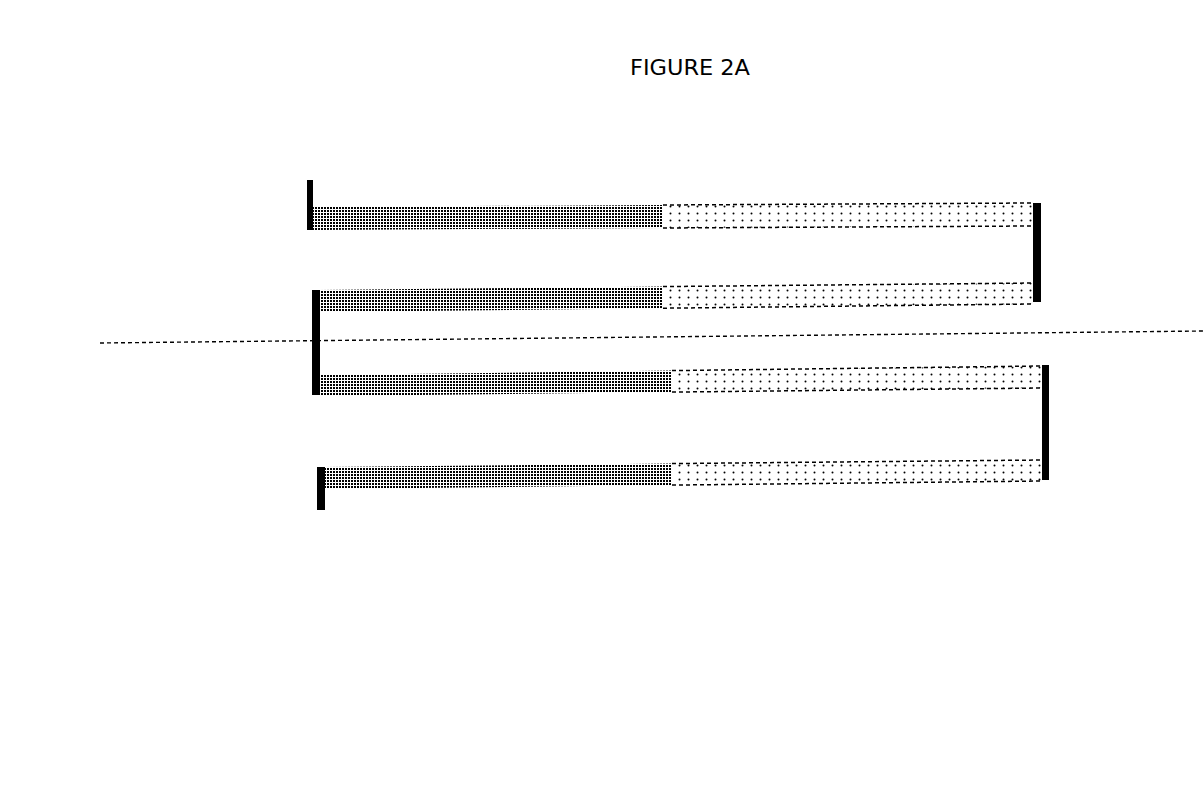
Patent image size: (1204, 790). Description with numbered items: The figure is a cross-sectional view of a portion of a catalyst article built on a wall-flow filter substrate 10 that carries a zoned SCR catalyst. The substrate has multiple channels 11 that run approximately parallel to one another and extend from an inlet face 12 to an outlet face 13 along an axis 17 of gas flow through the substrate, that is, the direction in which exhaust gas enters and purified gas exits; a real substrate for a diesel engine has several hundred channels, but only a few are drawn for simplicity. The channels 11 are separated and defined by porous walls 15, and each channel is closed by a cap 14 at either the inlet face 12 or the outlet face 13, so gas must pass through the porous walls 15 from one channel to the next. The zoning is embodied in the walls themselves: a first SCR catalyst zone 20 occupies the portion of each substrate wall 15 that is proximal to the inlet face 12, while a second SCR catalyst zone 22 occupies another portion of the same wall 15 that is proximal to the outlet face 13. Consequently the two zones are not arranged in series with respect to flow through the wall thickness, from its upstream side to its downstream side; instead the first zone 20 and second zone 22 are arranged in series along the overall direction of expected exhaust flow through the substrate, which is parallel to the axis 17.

The wall-flow filter substrate 10 is at (652, 419).
The channels 11 is at (705, 250).
The inlet face 12 is at (292, 497).
The outlet face 13 is at (1064, 412).
The cap 14 is at (312, 388).
The porous walls 15 is at (681, 272).
The axis 17 is at (190, 343).
The first SCR catalyst zone 20 is at (382, 393).
The second SCR catalyst zone 22 is at (885, 385).